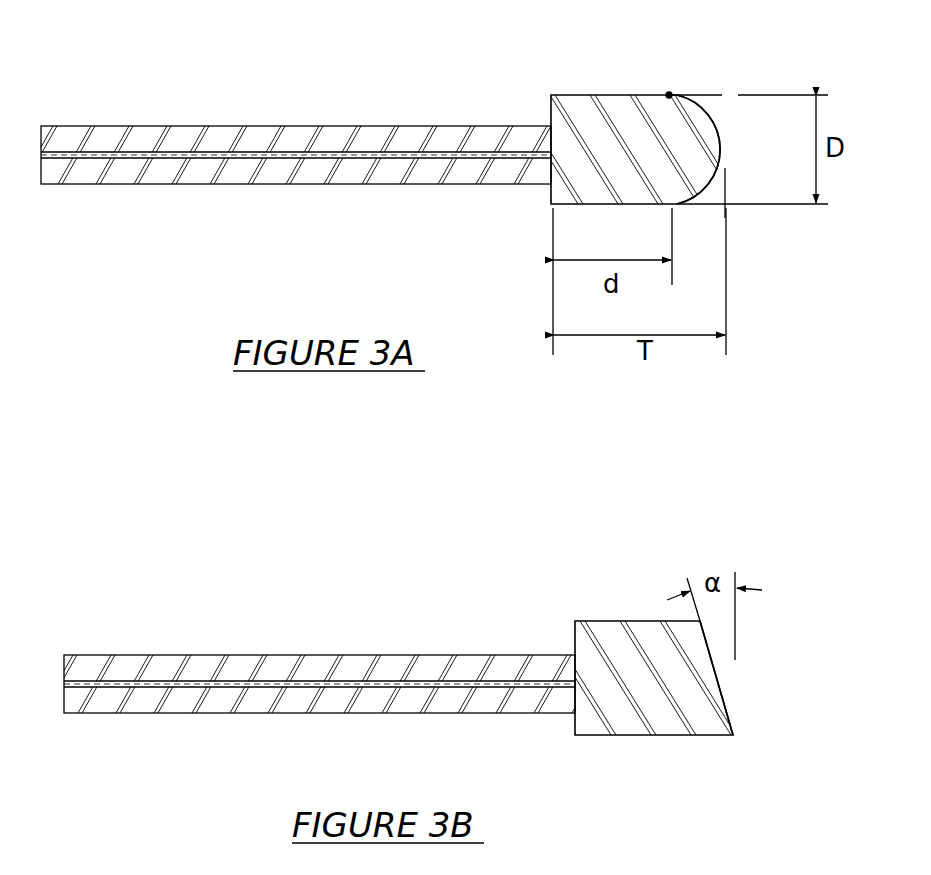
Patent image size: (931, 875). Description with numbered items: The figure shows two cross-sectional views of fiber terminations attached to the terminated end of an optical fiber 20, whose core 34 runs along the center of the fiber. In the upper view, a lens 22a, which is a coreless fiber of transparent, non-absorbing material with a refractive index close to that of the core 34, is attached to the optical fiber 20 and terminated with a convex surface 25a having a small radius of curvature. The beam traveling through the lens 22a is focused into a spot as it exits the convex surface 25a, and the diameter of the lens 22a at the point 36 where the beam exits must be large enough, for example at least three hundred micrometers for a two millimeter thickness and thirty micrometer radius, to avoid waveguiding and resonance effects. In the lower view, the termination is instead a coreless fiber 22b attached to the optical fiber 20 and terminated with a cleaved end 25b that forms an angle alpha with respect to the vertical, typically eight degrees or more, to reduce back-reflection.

In FIG. 3A, the optical fiber 20 is at (110, 126).
In FIG. 3B, the optical fiber 20 is at (143, 663).
In FIG. 3A, the core 34 is at (116, 184).
In FIG. 3B, the core 34 is at (160, 687).
In FIG. 3A, the lens 22a is at (622, 95).
In FIG. 3A, the point 36 is at (670, 94).
In FIG. 3A, the convex surface 25a is at (713, 113).
In FIG. 3B, the coreless fiber 22b is at (623, 621).
In FIG. 3B, the cleaved end 25b is at (720, 677).